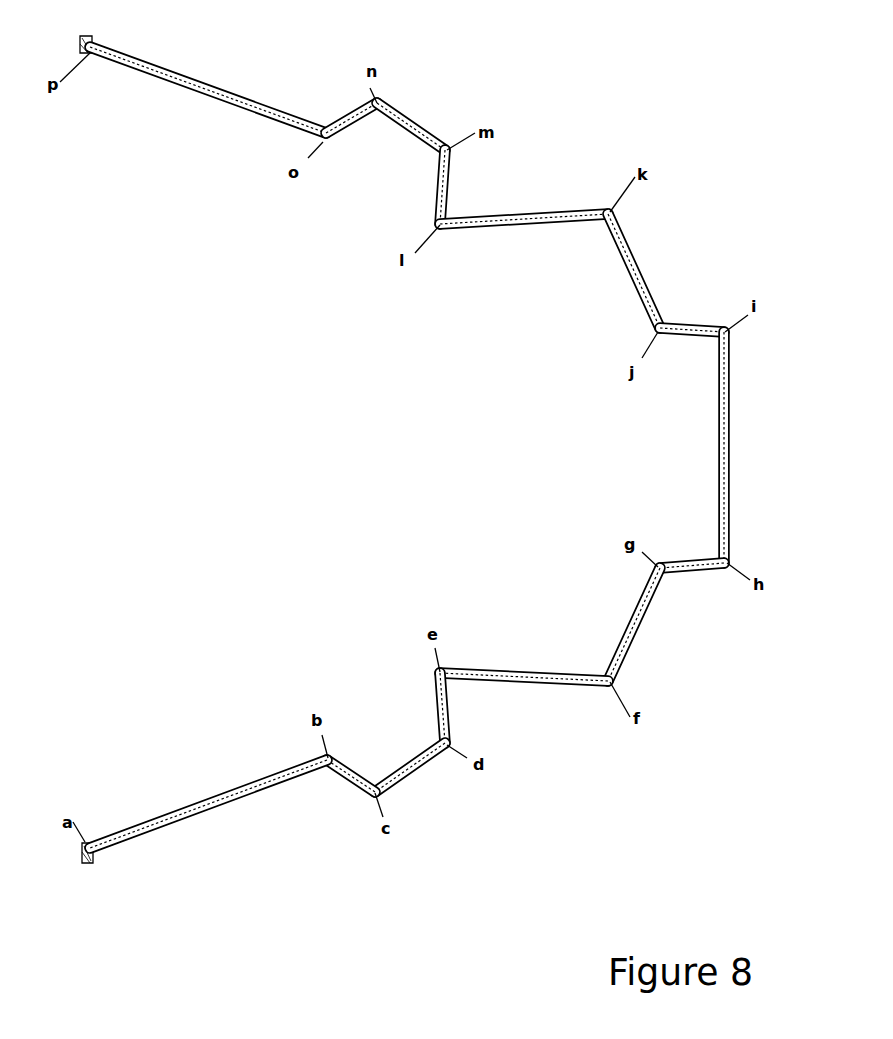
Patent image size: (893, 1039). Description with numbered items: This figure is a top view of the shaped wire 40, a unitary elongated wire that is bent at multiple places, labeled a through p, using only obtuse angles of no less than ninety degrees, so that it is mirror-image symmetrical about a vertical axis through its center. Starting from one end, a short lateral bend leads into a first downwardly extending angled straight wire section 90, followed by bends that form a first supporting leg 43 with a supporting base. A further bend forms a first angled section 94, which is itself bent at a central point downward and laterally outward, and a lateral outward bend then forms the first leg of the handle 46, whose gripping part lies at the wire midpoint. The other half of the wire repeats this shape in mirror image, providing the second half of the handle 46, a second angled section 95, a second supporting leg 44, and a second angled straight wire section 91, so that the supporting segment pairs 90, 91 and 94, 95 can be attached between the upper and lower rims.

The wire 40 is at (683, 279).
The first downwardly extending angled straight wire section 90 is at (238, 798).
The second angled straight wire section 91 is at (203, 84).
The first supporting leg 43 is at (417, 768).
The second supporting leg 44 is at (423, 135).
The first angled section 94 is at (564, 690).
The second angled section 95 is at (597, 213).
The handle 46 is at (730, 400).